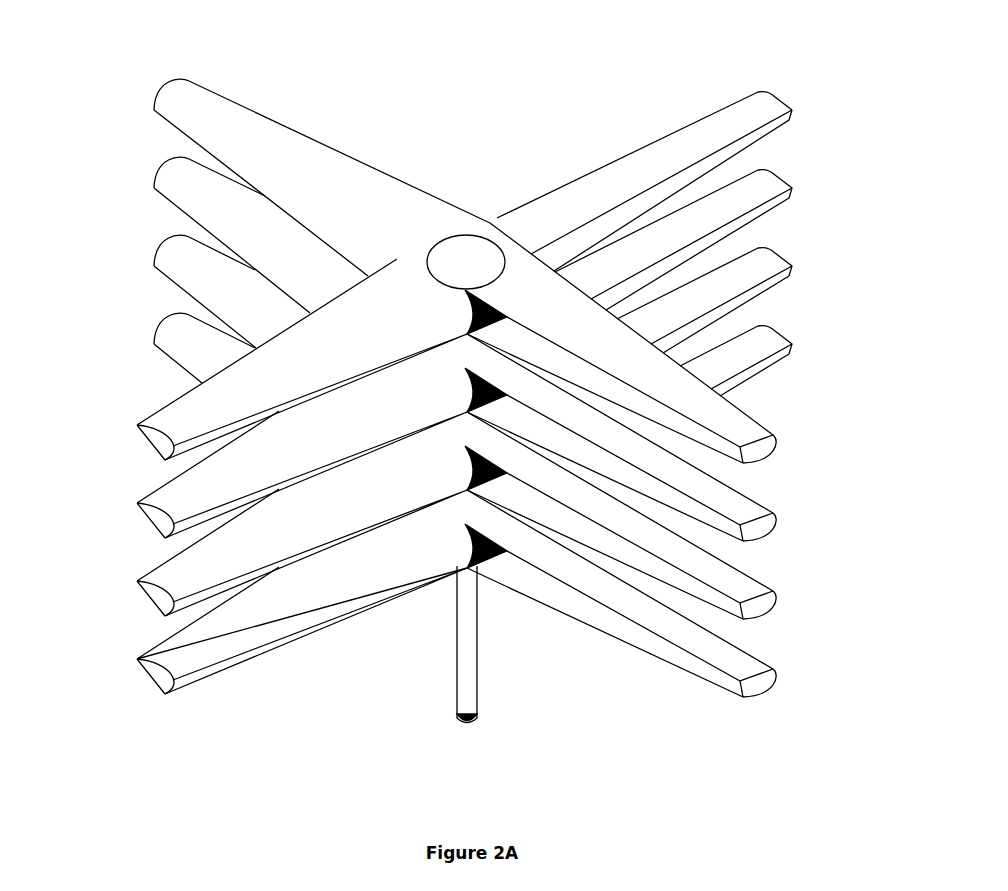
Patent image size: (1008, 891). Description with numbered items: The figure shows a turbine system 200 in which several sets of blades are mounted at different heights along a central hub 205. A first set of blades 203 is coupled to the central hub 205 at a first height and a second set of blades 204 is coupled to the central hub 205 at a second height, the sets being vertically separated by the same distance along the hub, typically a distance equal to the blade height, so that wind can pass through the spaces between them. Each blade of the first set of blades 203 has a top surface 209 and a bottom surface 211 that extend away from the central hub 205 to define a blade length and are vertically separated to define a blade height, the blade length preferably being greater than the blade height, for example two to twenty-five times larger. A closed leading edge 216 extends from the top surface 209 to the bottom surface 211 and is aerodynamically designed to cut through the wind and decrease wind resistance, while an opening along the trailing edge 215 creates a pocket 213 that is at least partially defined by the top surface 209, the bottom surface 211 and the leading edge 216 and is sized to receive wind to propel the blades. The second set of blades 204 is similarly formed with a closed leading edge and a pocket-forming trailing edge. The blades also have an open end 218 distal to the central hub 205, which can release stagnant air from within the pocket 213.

The turbine system 200 is at (110, 102).
The first set of blades 203 is at (742, 422).
The second set of blades 204 is at (748, 507).
The central hub 205 is at (466, 258).
The top surface 209 is at (633, 166).
The bottom surface 211 is at (788, 127).
The pocket 213 is at (744, 144).
The trailing edge 215 is at (732, 153).
The closed leading edge 216 is at (168, 124).
The open end 218 is at (151, 454).